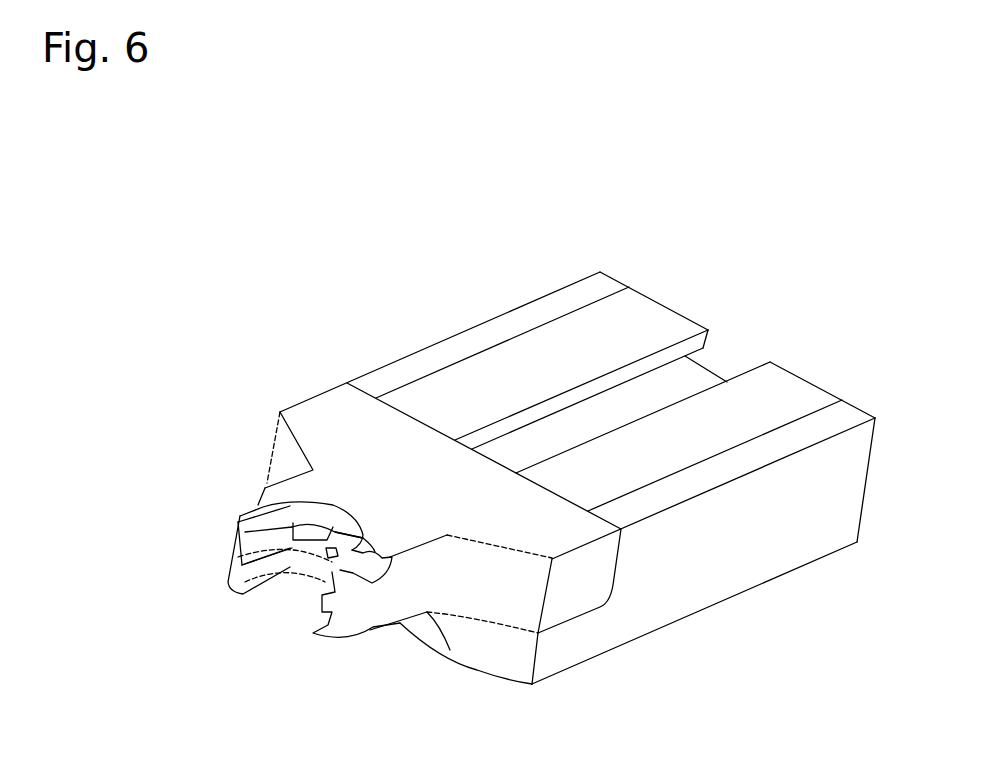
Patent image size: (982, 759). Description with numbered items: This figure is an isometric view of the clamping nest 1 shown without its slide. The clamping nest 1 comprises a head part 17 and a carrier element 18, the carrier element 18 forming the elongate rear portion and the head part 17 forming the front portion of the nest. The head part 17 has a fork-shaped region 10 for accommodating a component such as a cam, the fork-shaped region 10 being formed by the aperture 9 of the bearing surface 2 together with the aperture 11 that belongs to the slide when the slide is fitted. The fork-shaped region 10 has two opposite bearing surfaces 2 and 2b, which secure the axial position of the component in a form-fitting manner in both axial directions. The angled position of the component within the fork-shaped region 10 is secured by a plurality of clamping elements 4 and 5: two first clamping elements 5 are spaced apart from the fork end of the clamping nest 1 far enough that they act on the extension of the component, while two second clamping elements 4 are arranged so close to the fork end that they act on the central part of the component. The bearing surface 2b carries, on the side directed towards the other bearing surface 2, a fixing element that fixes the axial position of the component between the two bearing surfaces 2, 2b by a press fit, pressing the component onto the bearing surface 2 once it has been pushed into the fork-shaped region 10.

The clamping nest 1 is at (215, 228).
The bearing surface 2 is at (330, 548).
The bearing surface 2b is at (332, 552).
The second clamping elements 4 is at (252, 538).
The first clamping elements 5 is at (303, 528).
The aperture 9 is at (333, 545).
The fork-shaped region 10 is at (240, 580).
The aperture 11 is at (345, 518).
The head part 17 is at (418, 460).
The carrier element 18 is at (548, 310).